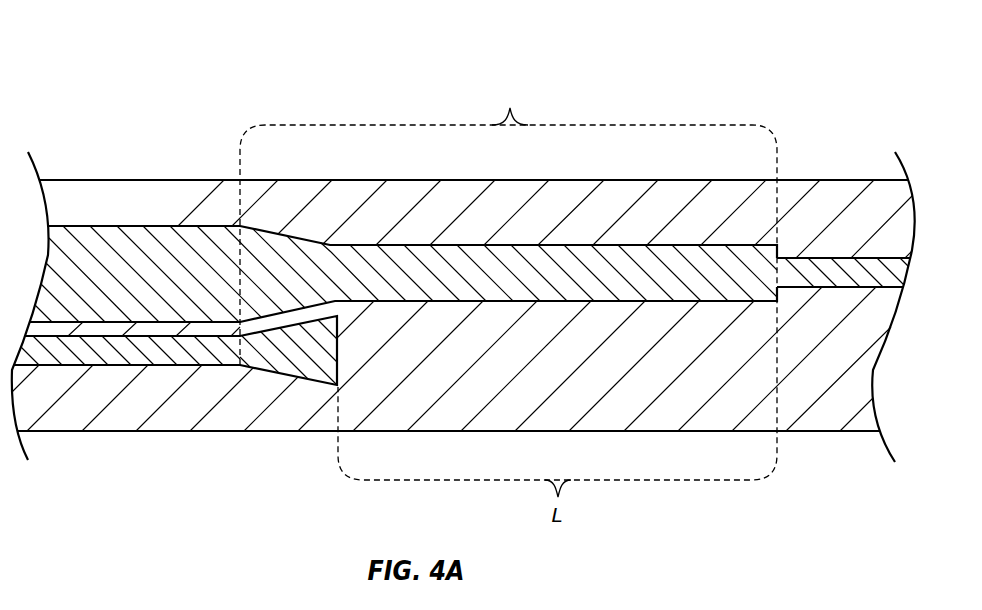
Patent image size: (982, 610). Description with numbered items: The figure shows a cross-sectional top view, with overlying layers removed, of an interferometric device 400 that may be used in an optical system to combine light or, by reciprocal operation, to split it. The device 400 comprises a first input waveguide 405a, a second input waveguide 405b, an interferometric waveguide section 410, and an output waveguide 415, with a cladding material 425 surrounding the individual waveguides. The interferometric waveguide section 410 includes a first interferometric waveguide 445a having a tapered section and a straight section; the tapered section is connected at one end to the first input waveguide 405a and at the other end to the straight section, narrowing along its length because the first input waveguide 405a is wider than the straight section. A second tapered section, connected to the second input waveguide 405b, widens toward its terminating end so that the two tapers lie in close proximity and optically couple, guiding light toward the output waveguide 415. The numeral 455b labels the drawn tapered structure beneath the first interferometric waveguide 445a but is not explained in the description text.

The interferometric device 400 is at (71, 77).
The first input waveguide 405a is at (126, 225).
The second input waveguide 405b is at (128, 366).
The interferometric waveguide section 410 is at (508, 291).
The output waveguide 415 is at (840, 258).
The cladding material 425 is at (521, 196).
The first interferometric waveguide 445a is at (289, 226).
The second tapered conductor layer 455b is at (291, 378).